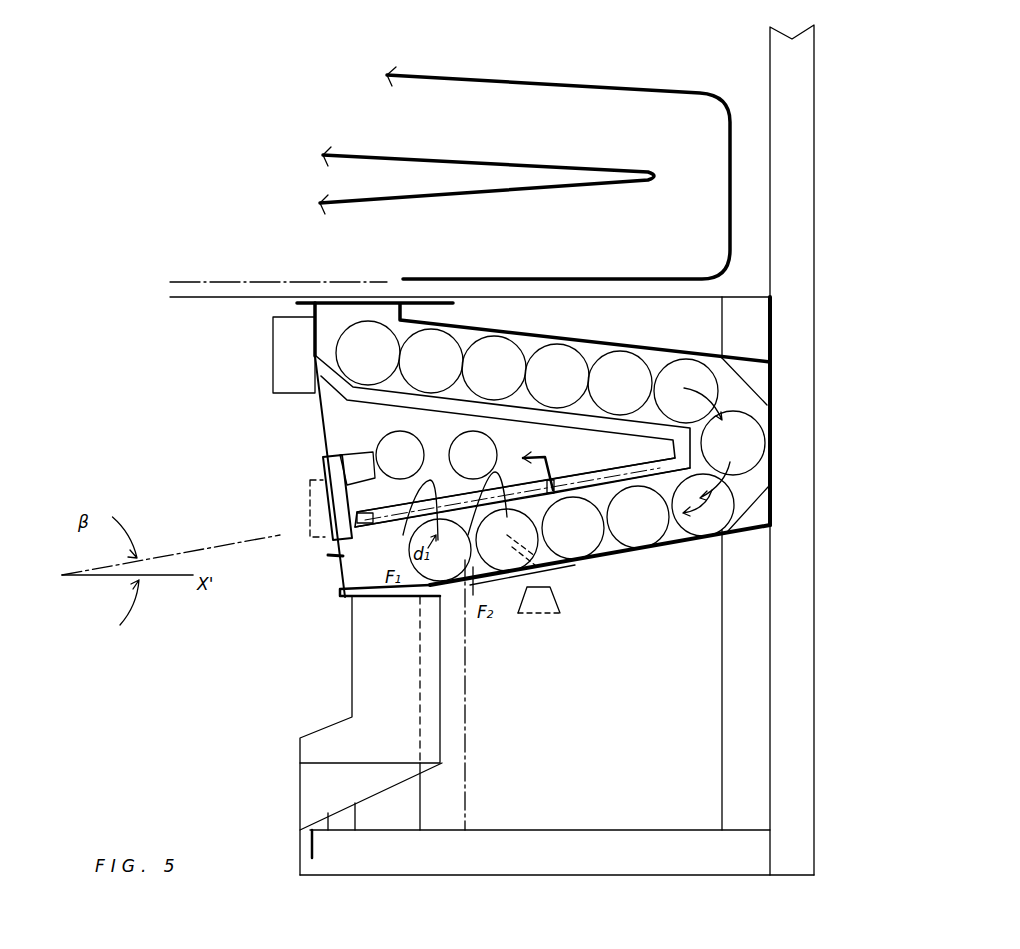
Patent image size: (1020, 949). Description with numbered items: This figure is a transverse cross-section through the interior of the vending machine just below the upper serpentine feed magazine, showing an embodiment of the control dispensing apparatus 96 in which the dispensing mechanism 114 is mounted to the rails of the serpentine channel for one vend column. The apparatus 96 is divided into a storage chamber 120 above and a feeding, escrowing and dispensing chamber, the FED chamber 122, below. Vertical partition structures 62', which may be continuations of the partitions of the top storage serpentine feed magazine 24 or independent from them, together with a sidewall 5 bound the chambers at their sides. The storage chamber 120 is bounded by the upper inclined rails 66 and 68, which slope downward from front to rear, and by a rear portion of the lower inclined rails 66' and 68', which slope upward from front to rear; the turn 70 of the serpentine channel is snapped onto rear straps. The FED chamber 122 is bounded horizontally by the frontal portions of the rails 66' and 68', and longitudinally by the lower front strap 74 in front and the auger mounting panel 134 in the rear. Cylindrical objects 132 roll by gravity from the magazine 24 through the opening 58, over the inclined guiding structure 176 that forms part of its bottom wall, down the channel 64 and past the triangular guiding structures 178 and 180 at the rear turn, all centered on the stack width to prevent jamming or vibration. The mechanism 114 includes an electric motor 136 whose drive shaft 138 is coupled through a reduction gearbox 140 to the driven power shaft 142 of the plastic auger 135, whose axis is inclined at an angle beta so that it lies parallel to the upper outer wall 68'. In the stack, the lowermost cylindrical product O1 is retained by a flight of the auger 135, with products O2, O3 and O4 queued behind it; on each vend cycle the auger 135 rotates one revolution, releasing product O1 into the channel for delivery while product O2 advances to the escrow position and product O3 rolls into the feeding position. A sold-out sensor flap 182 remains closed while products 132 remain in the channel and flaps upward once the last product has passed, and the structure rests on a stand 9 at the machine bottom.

The sidewall 5 is at (772, 812).
The stand 9 is at (290, 774).
The top storage serpentine feed magazine 24 is at (838, 93).
The opening 58 is at (355, 303).
The vertical partition structures 62' is at (578, 710).
The channel 64 is at (467, 337).
The upper inclined rail 66 is at (526, 361).
The lower inclined rail 66' is at (503, 441).
The upper inclined rail 68 is at (709, 411).
The lower inclined rail 68' is at (555, 569).
The turn of the serpentine channel 70 is at (757, 408).
The lower front strap 74 is at (343, 572).
The control dispensing apparatus 96 is at (871, 297).
The dispensing mechanism 114 is at (239, 445).
The storage chamber 120 is at (625, 558).
The FED chamber 122 is at (608, 634).
The cylindrical objects 132 is at (345, 350).
The auger mounting panel 134 is at (550, 475).
The plastic auger 135 is at (398, 533).
The electric motor 136 is at (340, 455).
The drive shaft 138 is at (357, 557).
The reduction gearbox 140 is at (318, 522).
The driven power shaft 142 is at (352, 509).
The inclined guiding structure 176 is at (323, 377).
The triangular guiding structure 178 is at (757, 374).
The triangular guiding structure 180 is at (775, 507).
The sold-out sensor flap 182 is at (555, 560).
The lowermost cylindrical product O1 is at (437, 600).
The cylindrical product O2 is at (507, 565).
The cylindrical product O3 is at (578, 555).
The roller center O4 is at (643, 540).